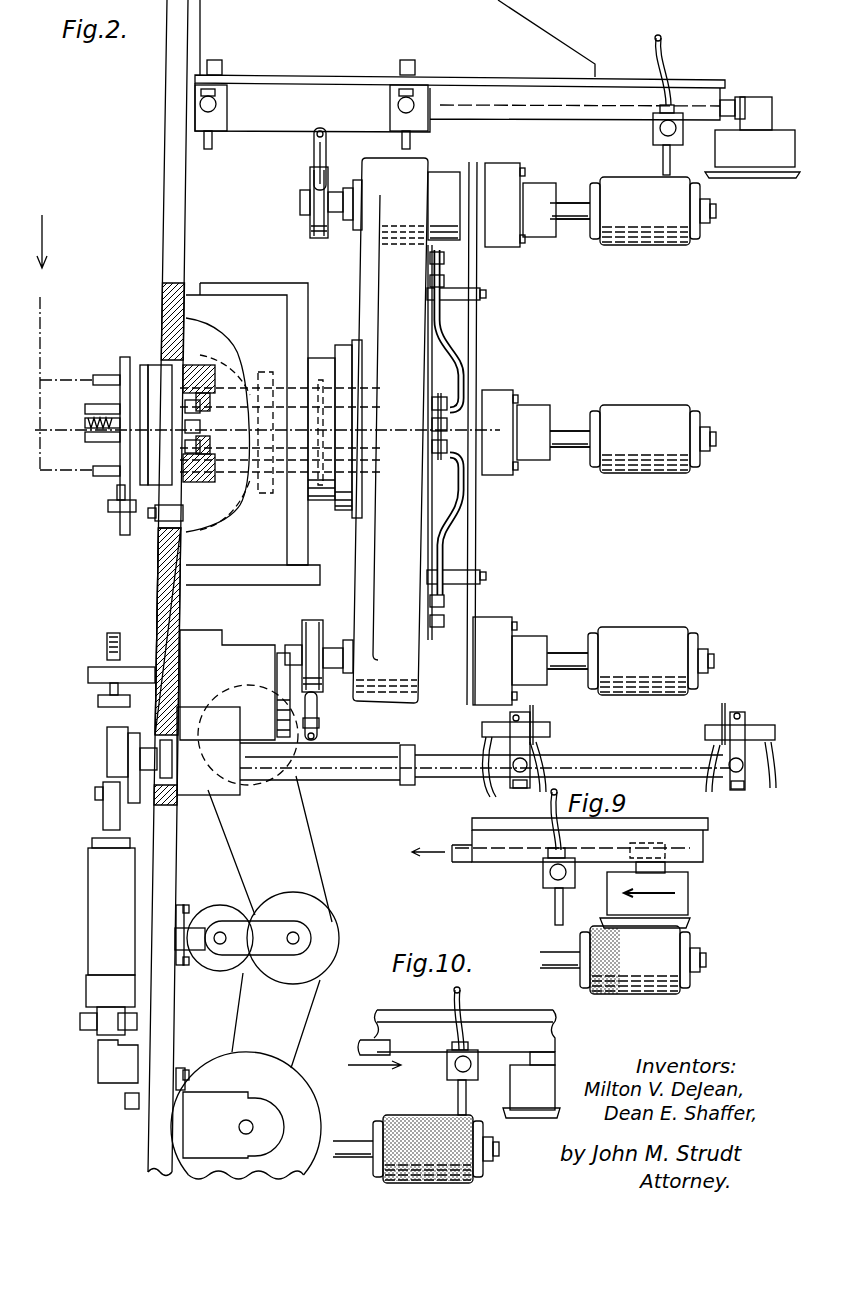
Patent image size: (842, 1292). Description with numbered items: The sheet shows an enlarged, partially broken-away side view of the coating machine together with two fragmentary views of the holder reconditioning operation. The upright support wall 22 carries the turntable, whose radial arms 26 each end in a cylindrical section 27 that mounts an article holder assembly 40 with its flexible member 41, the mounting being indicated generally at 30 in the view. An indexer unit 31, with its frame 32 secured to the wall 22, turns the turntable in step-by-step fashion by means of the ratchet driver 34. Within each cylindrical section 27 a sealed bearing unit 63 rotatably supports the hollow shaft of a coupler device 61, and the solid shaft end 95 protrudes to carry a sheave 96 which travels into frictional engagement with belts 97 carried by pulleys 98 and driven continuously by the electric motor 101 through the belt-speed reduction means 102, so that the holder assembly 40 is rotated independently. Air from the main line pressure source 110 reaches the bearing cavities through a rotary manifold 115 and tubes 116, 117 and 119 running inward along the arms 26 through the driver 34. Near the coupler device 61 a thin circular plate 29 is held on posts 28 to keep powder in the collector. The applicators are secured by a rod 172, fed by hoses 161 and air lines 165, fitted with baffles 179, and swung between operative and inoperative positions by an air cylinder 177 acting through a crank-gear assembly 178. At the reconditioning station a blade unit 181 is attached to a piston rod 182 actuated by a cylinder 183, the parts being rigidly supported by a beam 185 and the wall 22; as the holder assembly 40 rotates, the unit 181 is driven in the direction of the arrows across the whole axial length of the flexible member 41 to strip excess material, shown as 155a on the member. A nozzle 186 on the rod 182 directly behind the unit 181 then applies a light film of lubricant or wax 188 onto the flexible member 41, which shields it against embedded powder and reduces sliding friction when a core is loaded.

In FIG. 2, the upright support wall 22 is at (165, 171).
In FIG. 2, the radial arms 26 is at (418, 335).
In FIG. 2, the cylindrical section 27 is at (420, 168).
In FIG. 2, the integral posts 28 is at (462, 292).
In FIG. 2, the thin circular plate 29 is at (478, 530).
In FIG. 2, the clutch unit 30 is at (531, 421).
In FIG. 2, the indexer unit 31 is at (321, 351).
In FIG. 2, the indexer frame 32 is at (190, 552).
In FIG. 2, the ratchet driver 34 is at (222, 368).
In FIG. 2, the article holder assembly 40 is at (632, 451).
In FIG. 9, the article holder assembly 40 is at (648, 958).
In FIG. 10, the article holder assembly 40 is at (432, 1134).
In FIG. 2, the flexible member 41 is at (641, 228).
In FIG. 9, the flexible member 41 is at (672, 992).
In FIG. 10, the flexible member 41 is at (472, 1136).
In FIG. 2, the coupler device 61 is at (512, 398).
In FIG. 2, the sealed bearing unit 63 is at (450, 186).
In FIG. 2, the shaft end 95 is at (341, 224).
In FIG. 2, the sheave 96 is at (316, 218).
In FIG. 2, the belts 97 is at (323, 129).
In FIG. 2, the pulleys 98 is at (319, 722).
In FIG. 2, the electric motor 101 is at (318, 1115).
In FIG. 2, the belt-speed reduction means 102 is at (332, 915).
In FIG. 2, the main line pressure source 110 is at (42, 238).
In FIG. 2, the rotary manifold 115 is at (152, 362).
In FIG. 2, the tube 116 is at (474, 460).
In FIG. 2, the tube 117 is at (440, 514).
In FIG. 2, the tube 119 is at (434, 306).
In FIG. 9, the coating 155a is at (592, 926).
In FIG. 2, the hoses 161 is at (540, 752).
In FIG. 2, the air lines 165 is at (485, 742).
In FIG. 2, the rod 172 is at (519, 776).
In FIG. 2, the air cylinder 177 is at (100, 948).
In FIG. 2, the crank-gear assembly 178 is at (115, 762).
In FIG. 2, the baffles 179 is at (536, 722).
In FIG. 2, the blade unit 181 is at (775, 179).
In FIG. 9, the blade unit 181 is at (690, 928).
In FIG. 2, the piston rod 182 is at (444, 108).
In FIG. 9, the piston rod 182 is at (468, 862).
In FIG. 10, the piston rod 182 is at (371, 1048).
In FIG. 2, the cylinder 183 is at (281, 118).
In FIG. 9, the cylinder 183 is at (560, 840).
In FIG. 10, the cylinder 183 is at (452, 1039).
In FIG. 2, the beam 185 is at (447, 76).
In FIG. 2, the nozzle 186 is at (660, 160).
In FIG. 9, the nozzle 186 is at (553, 908).
In FIG. 10, the nozzle 186 is at (467, 1096).
In FIG. 10, the lubricant or wax 188 is at (432, 1134).